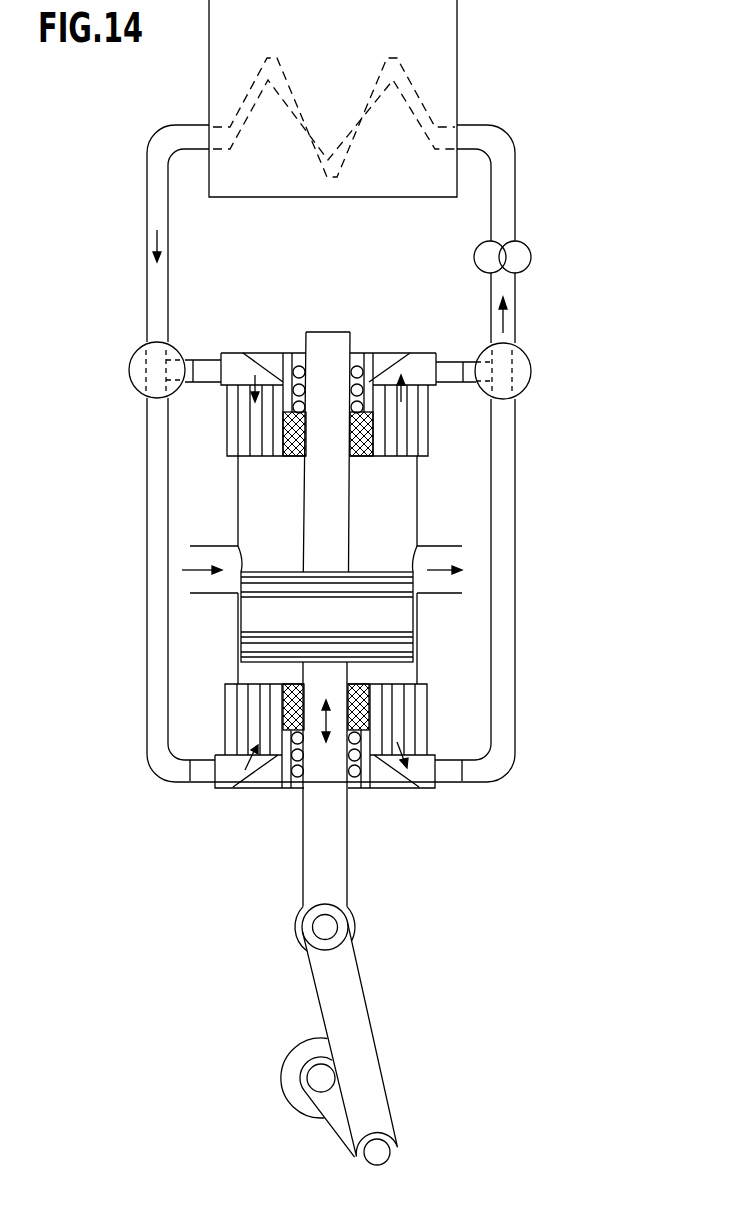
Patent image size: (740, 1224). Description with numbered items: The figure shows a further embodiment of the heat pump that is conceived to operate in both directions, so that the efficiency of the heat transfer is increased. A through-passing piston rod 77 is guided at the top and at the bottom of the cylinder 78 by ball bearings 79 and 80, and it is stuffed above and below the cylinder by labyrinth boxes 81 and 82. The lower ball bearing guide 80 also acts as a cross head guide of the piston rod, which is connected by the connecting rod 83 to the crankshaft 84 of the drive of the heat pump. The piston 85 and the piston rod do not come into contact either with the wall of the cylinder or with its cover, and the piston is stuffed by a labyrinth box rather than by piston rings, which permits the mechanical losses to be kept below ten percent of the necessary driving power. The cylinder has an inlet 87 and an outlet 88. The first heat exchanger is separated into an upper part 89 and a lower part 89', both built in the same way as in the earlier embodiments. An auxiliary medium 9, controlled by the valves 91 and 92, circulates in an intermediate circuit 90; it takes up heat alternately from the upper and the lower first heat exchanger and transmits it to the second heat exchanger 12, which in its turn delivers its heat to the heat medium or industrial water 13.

The auxiliary medium 9 is at (208, 370).
The second heat exchanger 12 is at (282, 60).
The heat medium 13 is at (443, 22).
The piston rod 77 is at (328, 855).
The cylinder 78 is at (418, 503).
The ball bearing 79 is at (367, 360).
The ball bearing 80 is at (270, 582).
The labyrinth box 81 is at (298, 458).
The labyrinth box 82 is at (360, 685).
The connecting rod 83 is at (352, 1010).
The crankshaft 84 is at (292, 1083).
The piston 85 is at (352, 612).
The inlet 87 is at (217, 598).
The outlet 88 is at (437, 598).
The upper part of first heat exchanger 89 is at (300, 436).
The lower part of first heat exchanger 89' is at (303, 723).
The intermediate circuit 90 is at (518, 452).
The valve 91 is at (132, 378).
The valve 92 is at (523, 368).